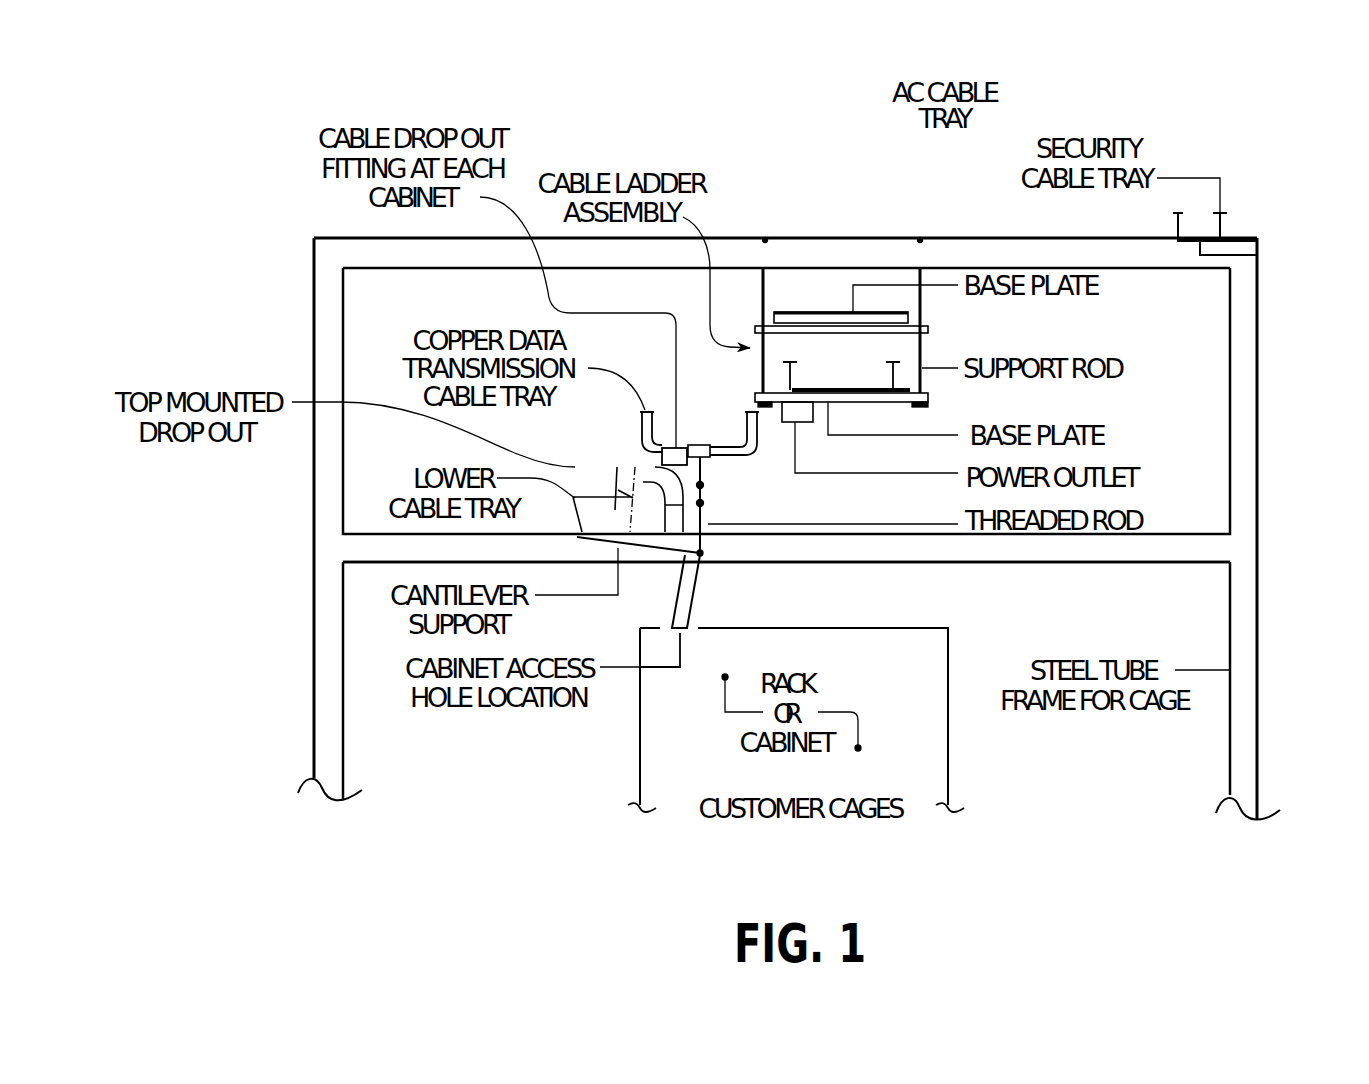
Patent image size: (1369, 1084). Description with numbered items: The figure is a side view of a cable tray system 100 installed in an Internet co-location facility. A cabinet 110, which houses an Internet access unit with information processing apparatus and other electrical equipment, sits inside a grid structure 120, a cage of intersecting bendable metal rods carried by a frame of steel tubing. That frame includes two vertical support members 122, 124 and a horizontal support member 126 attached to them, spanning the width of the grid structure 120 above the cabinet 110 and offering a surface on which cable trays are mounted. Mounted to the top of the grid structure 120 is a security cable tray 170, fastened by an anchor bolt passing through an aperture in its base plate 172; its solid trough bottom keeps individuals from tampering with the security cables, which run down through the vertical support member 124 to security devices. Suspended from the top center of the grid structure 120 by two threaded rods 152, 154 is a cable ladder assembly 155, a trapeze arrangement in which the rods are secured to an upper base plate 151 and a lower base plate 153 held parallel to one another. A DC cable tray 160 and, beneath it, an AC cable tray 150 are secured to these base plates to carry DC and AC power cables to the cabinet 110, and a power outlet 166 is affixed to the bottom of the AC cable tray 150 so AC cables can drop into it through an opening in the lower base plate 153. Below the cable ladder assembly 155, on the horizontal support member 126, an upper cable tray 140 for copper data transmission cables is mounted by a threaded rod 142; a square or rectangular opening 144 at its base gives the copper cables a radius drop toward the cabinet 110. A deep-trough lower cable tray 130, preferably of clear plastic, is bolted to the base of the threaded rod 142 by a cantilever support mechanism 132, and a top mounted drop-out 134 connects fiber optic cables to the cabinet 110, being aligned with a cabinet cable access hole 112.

The cable tray system 100 is at (212, 503).
The cabinet 110 is at (948, 752).
The cabinet cable access hole 112 is at (637, 667).
The grid structure 120 is at (360, 238).
The vertical support member 122 is at (313, 595).
The vertical support member 124 is at (1257, 508).
The horizontal support member 126 is at (1187, 563).
The lower cable tray 130 is at (578, 521).
The cantilever support mechanism 132 is at (658, 550).
The top mounted drop-out 134 is at (597, 485).
The upper cable tray 140 is at (732, 443).
The threaded rod 142 is at (703, 512).
The opening 144 is at (623, 375).
The AC cable tray 150 is at (815, 383).
The upper base plate 151 is at (928, 329).
The threaded rod 152 is at (765, 283).
The lower base plate 153 is at (852, 403).
The threaded rod 154 is at (922, 283).
The cable ladder assembly 155 is at (730, 328).
The DC cable tray 160 is at (795, 308).
The power outlet 166 is at (788, 427).
The security cable tray 170 is at (1220, 227).
The base plate 172 is at (1257, 255).